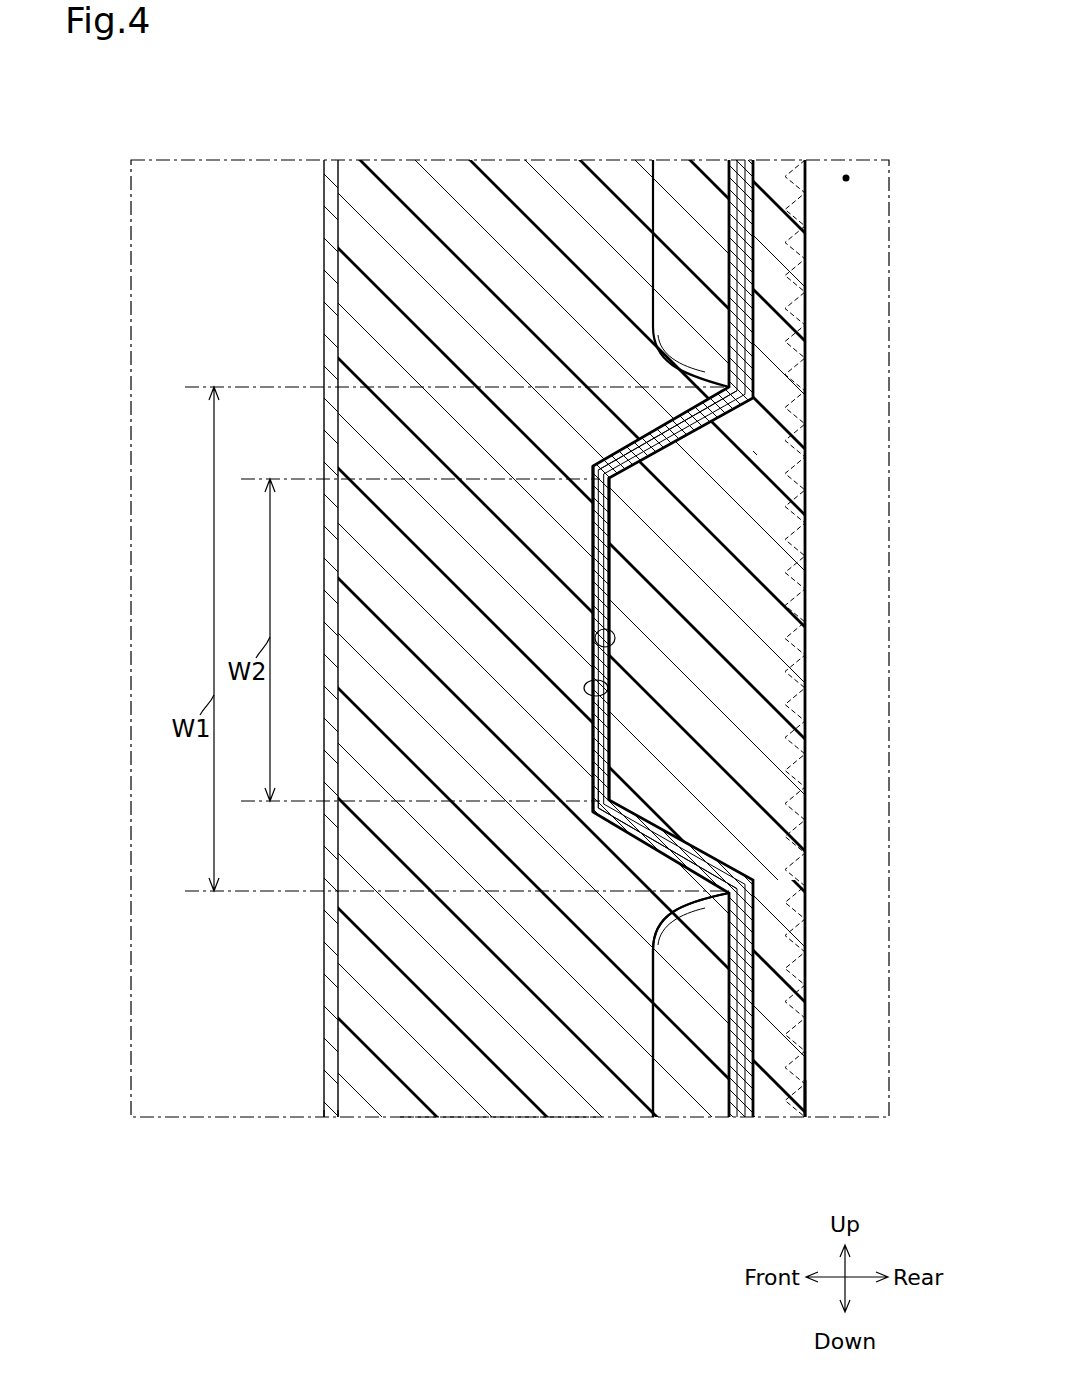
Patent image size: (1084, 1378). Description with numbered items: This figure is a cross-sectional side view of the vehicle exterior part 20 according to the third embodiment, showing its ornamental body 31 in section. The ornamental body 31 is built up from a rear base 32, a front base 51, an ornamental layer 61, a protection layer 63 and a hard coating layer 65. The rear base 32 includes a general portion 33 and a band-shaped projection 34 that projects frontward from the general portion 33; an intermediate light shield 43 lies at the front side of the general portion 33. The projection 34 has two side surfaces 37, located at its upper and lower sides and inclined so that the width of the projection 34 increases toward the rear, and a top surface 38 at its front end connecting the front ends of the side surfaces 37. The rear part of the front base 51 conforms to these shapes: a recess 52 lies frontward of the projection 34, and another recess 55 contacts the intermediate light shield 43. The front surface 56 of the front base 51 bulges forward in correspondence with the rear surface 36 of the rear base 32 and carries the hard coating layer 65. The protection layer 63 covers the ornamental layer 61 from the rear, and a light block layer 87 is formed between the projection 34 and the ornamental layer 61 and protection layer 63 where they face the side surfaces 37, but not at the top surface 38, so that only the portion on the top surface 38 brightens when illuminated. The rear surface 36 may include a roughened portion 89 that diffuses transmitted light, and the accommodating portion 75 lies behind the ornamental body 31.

The vehicle exterior part 20 is at (500, 1178).
The ornamental body 31 is at (534, 1152).
The rear base 32 is at (795, 596).
The general portion 33 is at (784, 172).
The band-shaped projection 34 is at (596, 745).
The rear surface 36 is at (808, 1108).
The side surfaces 37 is at (620, 448).
The top surface 38 is at (606, 688).
The intermediate light shield 43 is at (700, 168).
The front base 51 is at (460, 168).
The recess 52 is at (596, 640).
The recess 55 is at (660, 1105).
The front surface 56 is at (332, 1119).
The ornamental layer 61 is at (592, 562).
The protection layer 63 is at (610, 585).
The hard coating layer 65 is at (333, 158).
The accommodating portion 75 is at (846, 175).
The light block layer 87 is at (744, 164).
The roughened portion 89 is at (808, 650).